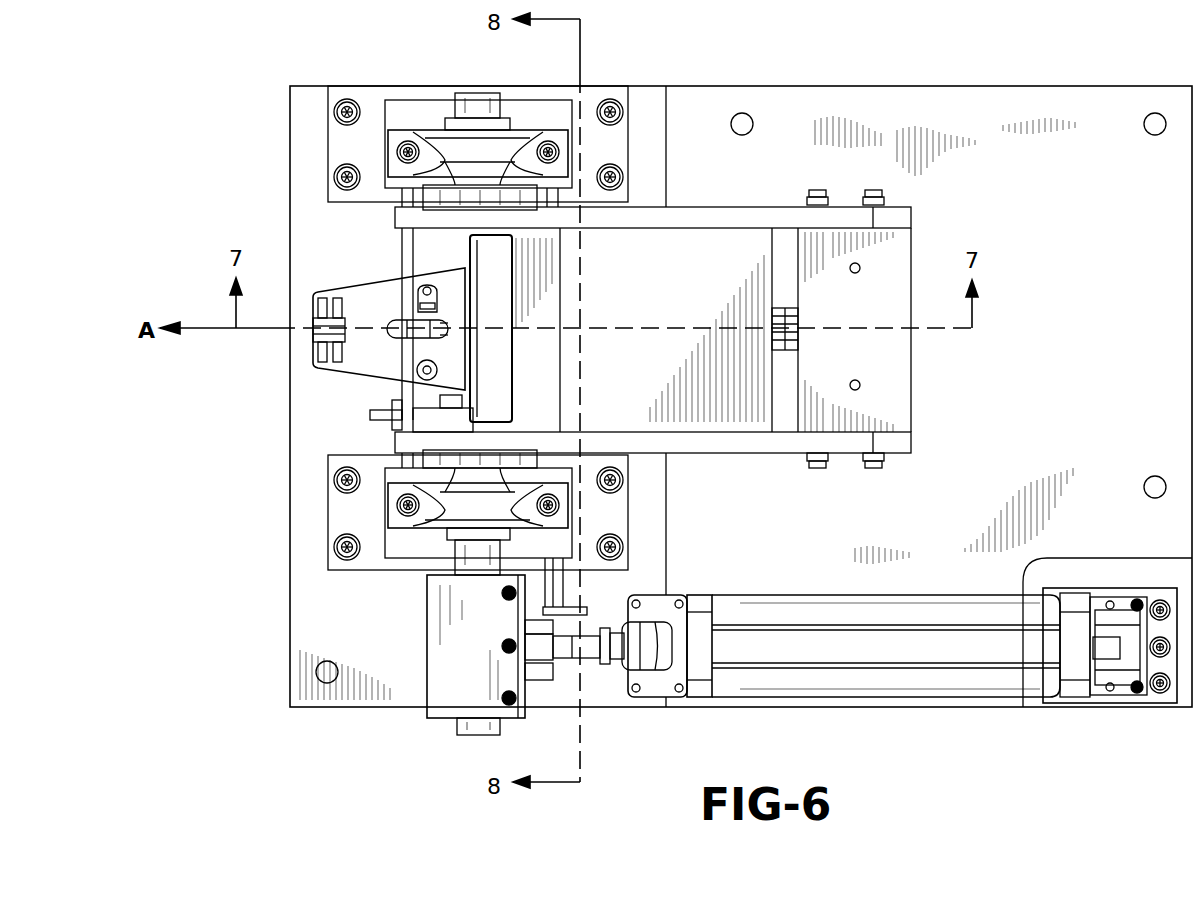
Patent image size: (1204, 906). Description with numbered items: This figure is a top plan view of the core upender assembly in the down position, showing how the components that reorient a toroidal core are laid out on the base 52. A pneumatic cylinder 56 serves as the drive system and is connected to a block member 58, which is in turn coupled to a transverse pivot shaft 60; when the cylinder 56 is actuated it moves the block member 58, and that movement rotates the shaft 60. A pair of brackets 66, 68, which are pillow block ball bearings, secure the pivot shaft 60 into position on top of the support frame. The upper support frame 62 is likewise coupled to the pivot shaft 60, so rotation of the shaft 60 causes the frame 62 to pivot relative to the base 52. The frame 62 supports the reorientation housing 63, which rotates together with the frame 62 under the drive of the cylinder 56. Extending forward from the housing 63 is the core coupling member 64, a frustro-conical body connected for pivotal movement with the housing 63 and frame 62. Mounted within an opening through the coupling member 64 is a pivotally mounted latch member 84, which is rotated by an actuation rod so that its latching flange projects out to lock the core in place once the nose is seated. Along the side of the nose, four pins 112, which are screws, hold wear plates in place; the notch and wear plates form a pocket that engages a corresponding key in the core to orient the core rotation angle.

The base 52 is at (782, 118).
The pneumatic cylinder 56 is at (958, 675).
The block member 58 is at (468, 632).
The transverse pivot shaft 60 is at (478, 95).
The upper support frame 62 is at (745, 440).
The reorientation housing 63 is at (683, 298).
The core coupling member 64 is at (346, 292).
The bracket 66 is at (395, 165).
The bracket 68 is at (395, 518).
The latch member 84 is at (423, 325).
The pins 112 is at (328, 366).